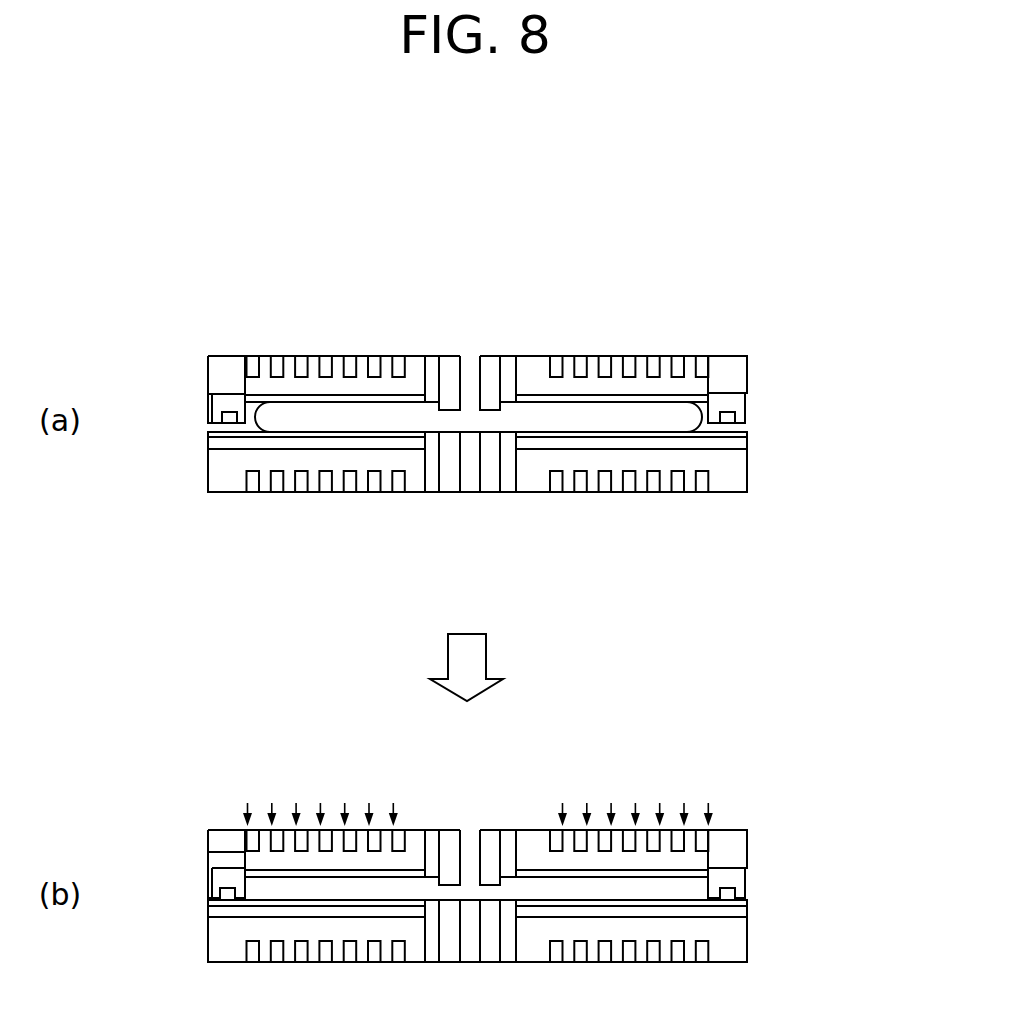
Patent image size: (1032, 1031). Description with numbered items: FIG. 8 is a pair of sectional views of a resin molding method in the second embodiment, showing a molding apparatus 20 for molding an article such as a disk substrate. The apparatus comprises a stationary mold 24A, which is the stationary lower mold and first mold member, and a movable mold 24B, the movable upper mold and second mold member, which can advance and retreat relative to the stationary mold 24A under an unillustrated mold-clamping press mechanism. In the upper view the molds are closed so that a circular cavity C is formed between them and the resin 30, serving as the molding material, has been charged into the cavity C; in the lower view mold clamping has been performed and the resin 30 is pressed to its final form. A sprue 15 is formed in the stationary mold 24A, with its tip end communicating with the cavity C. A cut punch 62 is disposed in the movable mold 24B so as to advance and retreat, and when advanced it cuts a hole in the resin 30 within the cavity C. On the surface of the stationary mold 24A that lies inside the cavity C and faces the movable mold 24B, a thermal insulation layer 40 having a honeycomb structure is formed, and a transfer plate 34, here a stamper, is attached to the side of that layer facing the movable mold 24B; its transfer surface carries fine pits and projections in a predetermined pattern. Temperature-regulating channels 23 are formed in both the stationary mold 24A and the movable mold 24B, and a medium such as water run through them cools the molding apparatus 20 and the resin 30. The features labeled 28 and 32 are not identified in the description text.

The molding apparatus 20 is at (672, 328).
The stationary mold 24A is at (737, 469).
The movable mold 24B is at (697, 387).
The projections of upper plate 28 is at (280, 356).
The resin 30 is at (333, 412).
The electrode layer of upper plate 32 is at (535, 398).
The cut punch 62 is at (453, 362).
The cavity C is at (252, 407).
The temperature-regulating channels 23 is at (253, 492).
The sprue 15 is at (472, 480).
The thermal insulation layer 40 is at (595, 440).
The transfer plate 34 is at (663, 438).